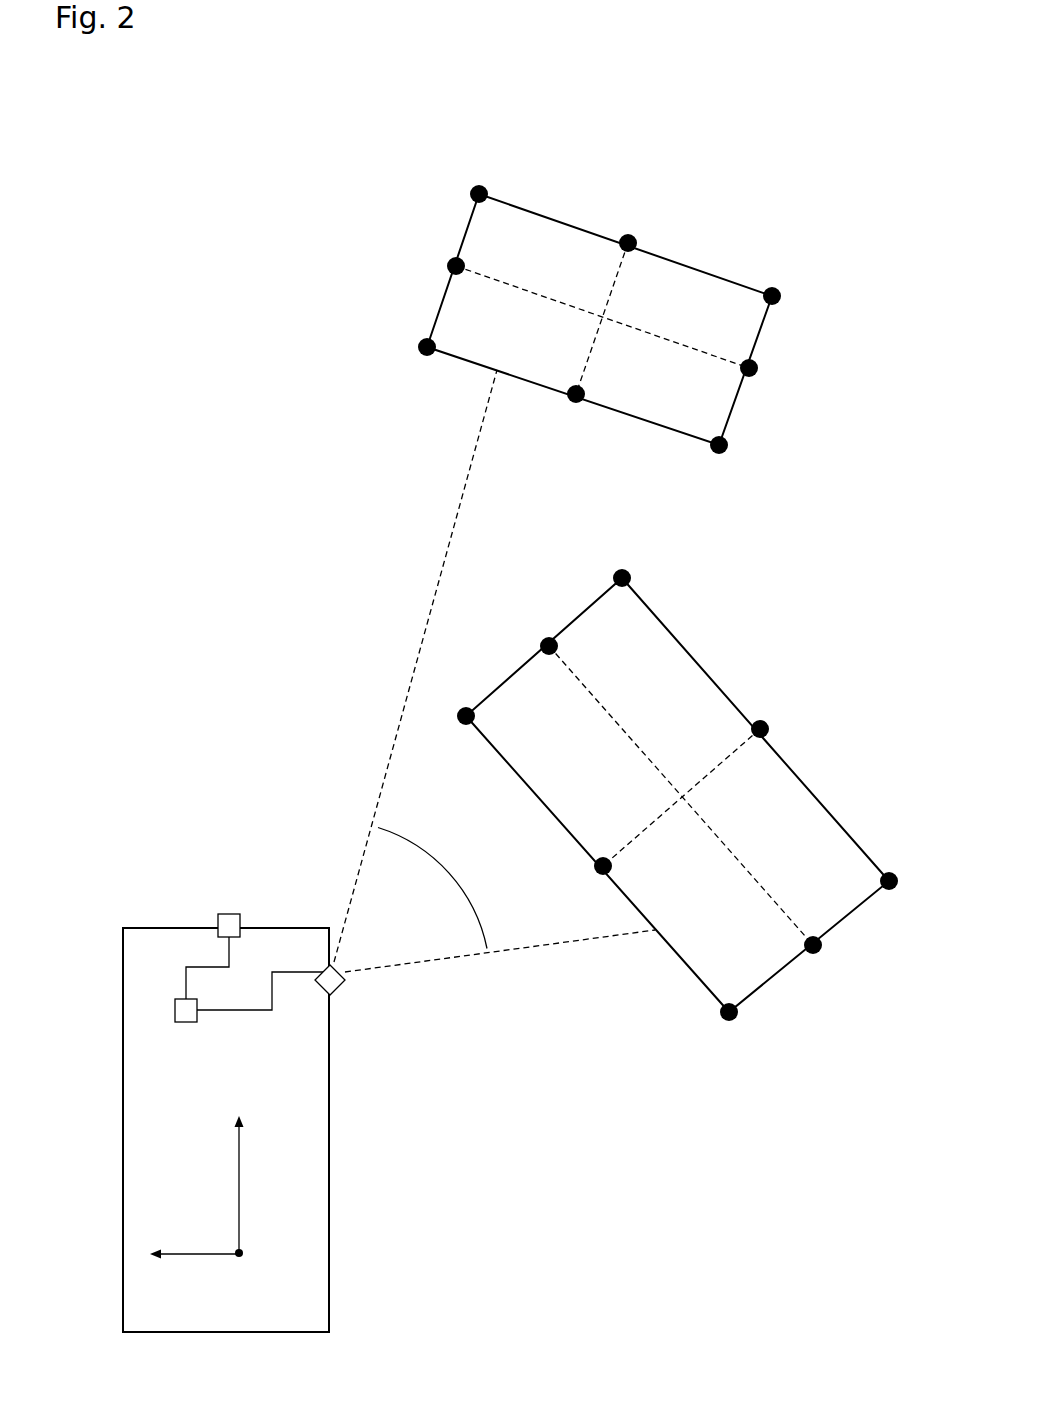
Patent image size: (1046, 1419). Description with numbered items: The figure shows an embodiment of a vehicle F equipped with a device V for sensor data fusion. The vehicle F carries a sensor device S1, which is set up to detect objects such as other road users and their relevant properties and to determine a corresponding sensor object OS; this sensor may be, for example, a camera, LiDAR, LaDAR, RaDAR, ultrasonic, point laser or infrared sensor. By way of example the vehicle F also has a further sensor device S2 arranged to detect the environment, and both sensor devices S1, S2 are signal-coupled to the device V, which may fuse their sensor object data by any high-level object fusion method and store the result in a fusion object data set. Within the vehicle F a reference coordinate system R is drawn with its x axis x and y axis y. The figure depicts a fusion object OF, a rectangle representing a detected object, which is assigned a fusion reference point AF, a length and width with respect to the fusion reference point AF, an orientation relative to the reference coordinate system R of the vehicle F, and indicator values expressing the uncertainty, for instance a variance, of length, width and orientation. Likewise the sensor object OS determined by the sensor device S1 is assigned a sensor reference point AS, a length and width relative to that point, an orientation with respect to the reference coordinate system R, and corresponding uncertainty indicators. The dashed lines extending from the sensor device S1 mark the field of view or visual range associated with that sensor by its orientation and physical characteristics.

The fusion object OF is at (515, 190).
The fusion reference point AF is at (735, 471).
The sensor object OS is at (589, 588).
The sensor reference point AS is at (735, 1041).
The vehicle F is at (130, 907).
The sensor device S1 is at (322, 967).
The further sensor device S2 is at (229, 914).
The device for sensor data fusion V is at (175, 1010).
The reference coordinate system R is at (262, 1254).
The x axis x is at (240, 1169).
The y axis y is at (185, 1252).